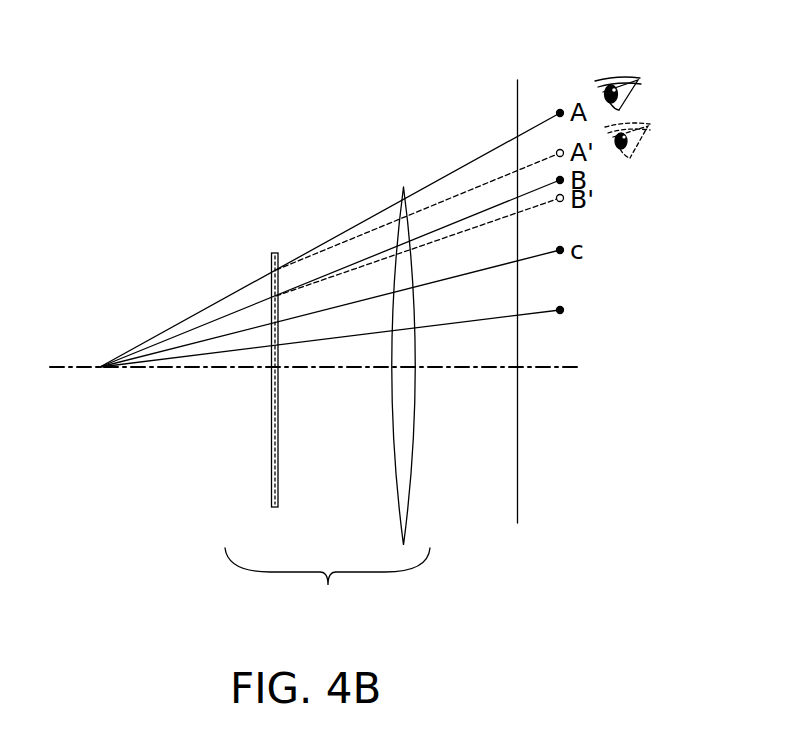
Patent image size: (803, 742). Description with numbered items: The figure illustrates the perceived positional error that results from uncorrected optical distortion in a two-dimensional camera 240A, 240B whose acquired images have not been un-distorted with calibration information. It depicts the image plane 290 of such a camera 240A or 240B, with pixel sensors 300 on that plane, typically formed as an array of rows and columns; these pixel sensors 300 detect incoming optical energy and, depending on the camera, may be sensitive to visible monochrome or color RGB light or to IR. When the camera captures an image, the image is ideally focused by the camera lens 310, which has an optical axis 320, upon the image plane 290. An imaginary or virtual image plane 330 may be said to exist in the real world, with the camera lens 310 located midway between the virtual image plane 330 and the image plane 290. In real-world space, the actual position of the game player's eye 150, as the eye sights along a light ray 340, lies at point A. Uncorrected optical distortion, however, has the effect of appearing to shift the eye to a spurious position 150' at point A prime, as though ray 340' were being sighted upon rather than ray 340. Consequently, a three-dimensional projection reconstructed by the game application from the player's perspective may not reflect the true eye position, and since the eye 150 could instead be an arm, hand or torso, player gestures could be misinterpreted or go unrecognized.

The game player's eye 150 is at (623, 71).
The spurious eye position 150' is at (689, 154).
The two-dimensional camera 240A is at (327, 585).
The two-dimensional camera 240B is at (327, 585).
The image plane 290 is at (270, 266).
The pixel sensors 300 is at (282, 259).
The camera lens 310 is at (413, 418).
The optical axis 320 is at (443, 370).
The virtual image plane 330 is at (519, 480).
The light ray 340 is at (330, 237).
The spurious light ray 340' is at (418, 216).